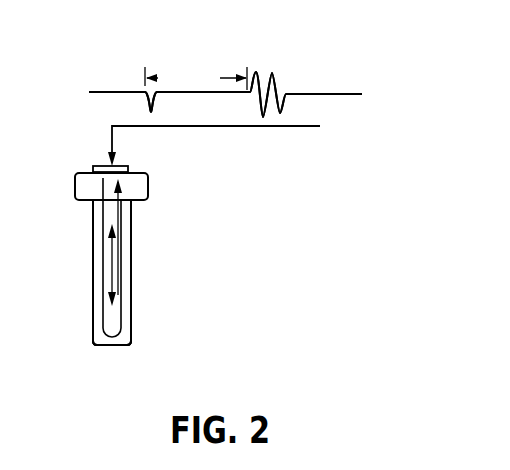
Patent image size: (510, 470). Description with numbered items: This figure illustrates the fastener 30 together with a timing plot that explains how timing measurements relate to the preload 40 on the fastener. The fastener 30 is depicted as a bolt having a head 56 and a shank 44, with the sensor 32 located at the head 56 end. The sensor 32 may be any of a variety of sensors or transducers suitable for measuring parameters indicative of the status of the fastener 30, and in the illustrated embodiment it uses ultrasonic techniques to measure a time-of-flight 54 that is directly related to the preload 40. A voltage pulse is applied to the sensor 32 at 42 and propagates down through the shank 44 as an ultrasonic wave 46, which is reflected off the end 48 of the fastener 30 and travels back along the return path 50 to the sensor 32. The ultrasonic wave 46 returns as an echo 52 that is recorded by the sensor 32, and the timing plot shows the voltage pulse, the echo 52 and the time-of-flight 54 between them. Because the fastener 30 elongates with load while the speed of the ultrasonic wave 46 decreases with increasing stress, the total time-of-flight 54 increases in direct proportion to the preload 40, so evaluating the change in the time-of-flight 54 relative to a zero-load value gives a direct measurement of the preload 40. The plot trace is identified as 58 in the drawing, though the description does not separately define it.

The fastener 30 is at (155, 239).
The sensor 32 is at (123, 165).
The preload 40 is at (102, 258).
The voltage pulse application point 42 is at (110, 146).
The shank 44 is at (92, 269).
The ultrasonic wave 46 is at (140, 106).
The end of the fastener 48 is at (105, 352).
The return path 50 is at (131, 283).
The echo 52 is at (287, 79).
The time-of-flight 54 is at (212, 62).
The head 56 is at (88, 186).
The signal trace 58 is at (341, 70).